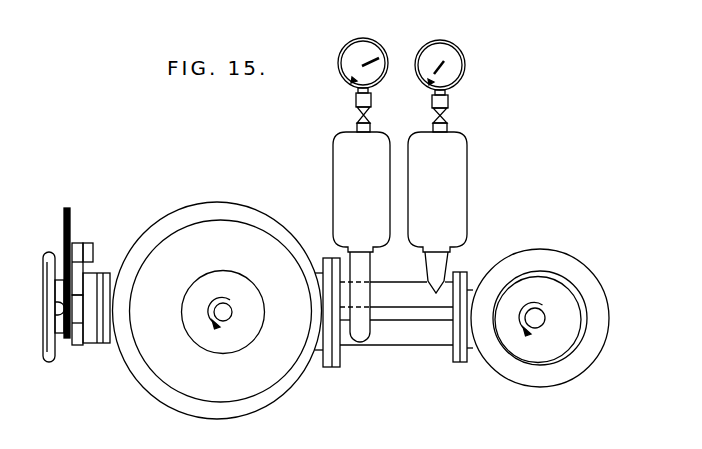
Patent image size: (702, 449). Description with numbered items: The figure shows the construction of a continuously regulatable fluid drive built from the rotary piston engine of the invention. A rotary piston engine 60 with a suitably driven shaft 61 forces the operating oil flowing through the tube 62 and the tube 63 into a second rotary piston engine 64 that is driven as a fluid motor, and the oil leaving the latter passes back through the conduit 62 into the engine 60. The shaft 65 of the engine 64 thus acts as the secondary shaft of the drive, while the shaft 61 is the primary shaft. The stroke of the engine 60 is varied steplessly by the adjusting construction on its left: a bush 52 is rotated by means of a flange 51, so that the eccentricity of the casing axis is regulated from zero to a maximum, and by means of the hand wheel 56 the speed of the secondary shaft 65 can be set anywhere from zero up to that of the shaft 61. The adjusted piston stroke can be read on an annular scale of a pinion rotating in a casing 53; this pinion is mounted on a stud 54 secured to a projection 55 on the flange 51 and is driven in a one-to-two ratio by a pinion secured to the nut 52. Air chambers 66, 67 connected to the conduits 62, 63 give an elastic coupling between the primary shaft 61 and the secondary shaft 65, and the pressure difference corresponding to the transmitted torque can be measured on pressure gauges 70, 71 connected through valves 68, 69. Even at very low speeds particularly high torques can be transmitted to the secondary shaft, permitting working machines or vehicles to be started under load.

The flange 51 is at (89, 341).
The bush 52 is at (83, 341).
The casing 53 is at (68, 233).
The stud 54 is at (78, 243).
The projection 55 is at (89, 245).
The hand wheel 56 is at (47, 328).
The rotary piston engine 60 is at (270, 395).
The shaft 61 is at (224, 315).
The tube 62 is at (385, 294).
The tube 63 is at (410, 338).
The rotary piston engine 64 is at (502, 360).
The shaft 65 is at (536, 317).
The air chamber 66 is at (437, 212).
The air chamber 67 is at (361, 237).
The valve 68 is at (448, 115).
The valve 69 is at (357, 115).
The pressure gauge 70 is at (457, 45).
The pressure gauge 71 is at (382, 43).